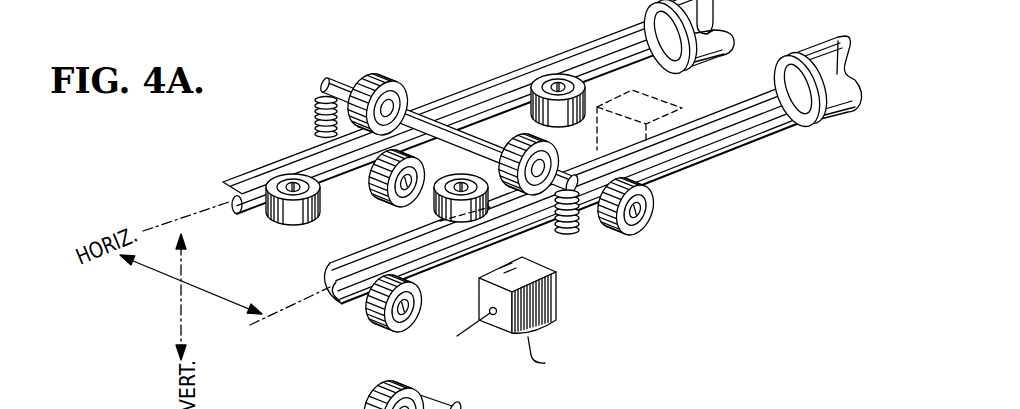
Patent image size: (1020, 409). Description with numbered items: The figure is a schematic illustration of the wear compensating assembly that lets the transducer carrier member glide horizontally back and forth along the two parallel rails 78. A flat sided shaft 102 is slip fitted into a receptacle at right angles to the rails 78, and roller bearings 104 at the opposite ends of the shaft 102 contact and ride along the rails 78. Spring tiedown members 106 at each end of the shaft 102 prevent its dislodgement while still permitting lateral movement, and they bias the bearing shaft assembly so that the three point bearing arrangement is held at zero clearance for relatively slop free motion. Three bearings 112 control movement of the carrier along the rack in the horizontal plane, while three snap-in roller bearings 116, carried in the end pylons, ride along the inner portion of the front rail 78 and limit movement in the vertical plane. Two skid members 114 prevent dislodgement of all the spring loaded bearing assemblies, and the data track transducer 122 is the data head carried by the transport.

The rails 78 is at (216, 183).
The flat sided shaft 102 is at (432, 121).
The roller bearings 104 is at (377, 80).
The spring tiedown members 106 is at (318, 108).
The bearings 112 is at (557, 86).
The skid members 114 is at (650, 107).
The snap-in roller bearing 116 is at (367, 194).
The data track transducer 122 is at (556, 282).